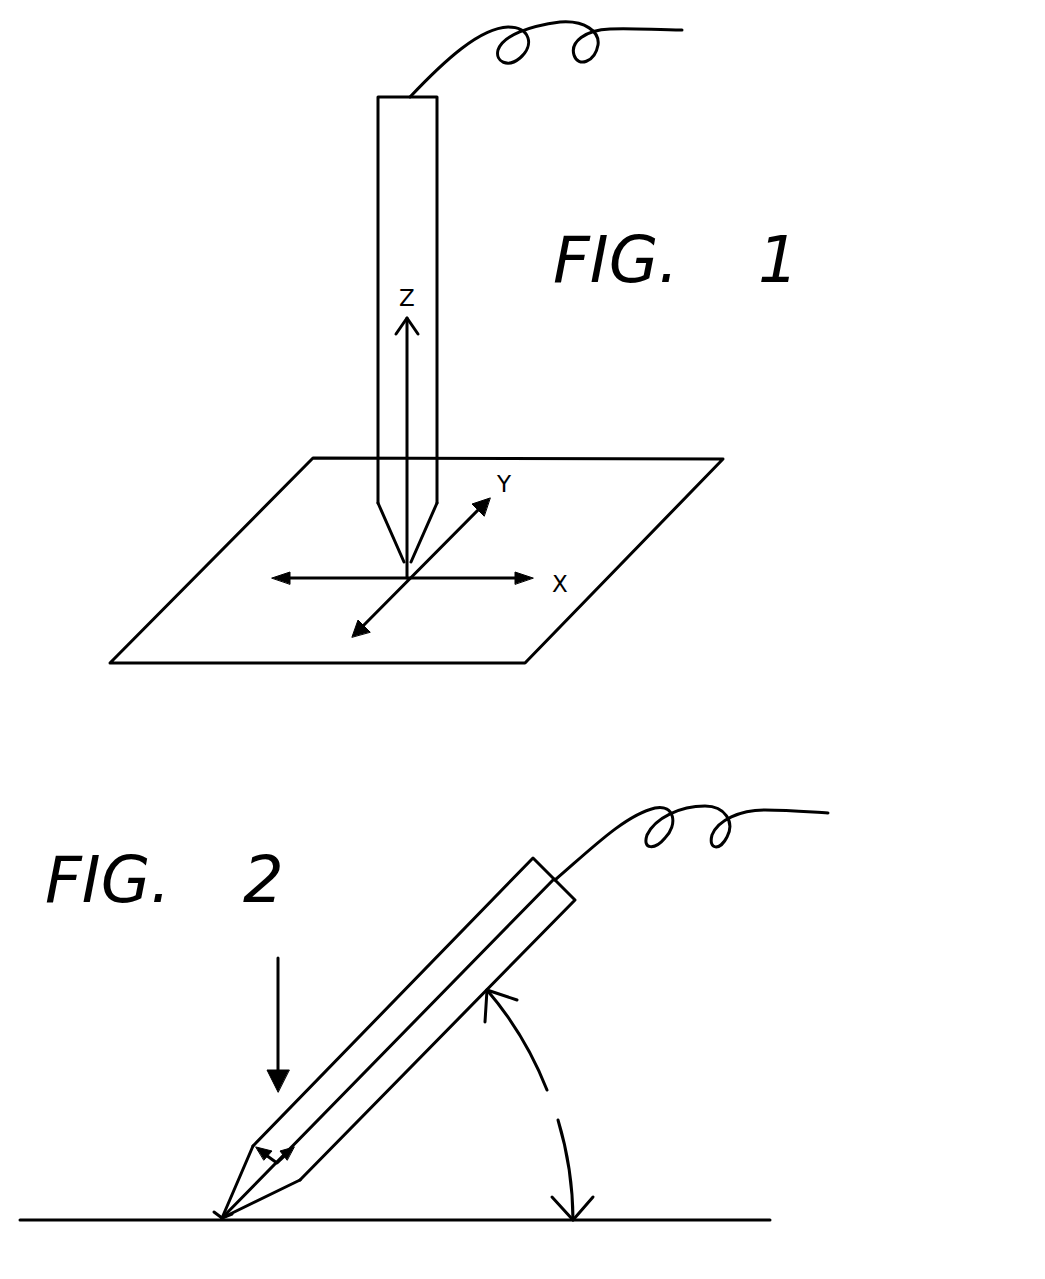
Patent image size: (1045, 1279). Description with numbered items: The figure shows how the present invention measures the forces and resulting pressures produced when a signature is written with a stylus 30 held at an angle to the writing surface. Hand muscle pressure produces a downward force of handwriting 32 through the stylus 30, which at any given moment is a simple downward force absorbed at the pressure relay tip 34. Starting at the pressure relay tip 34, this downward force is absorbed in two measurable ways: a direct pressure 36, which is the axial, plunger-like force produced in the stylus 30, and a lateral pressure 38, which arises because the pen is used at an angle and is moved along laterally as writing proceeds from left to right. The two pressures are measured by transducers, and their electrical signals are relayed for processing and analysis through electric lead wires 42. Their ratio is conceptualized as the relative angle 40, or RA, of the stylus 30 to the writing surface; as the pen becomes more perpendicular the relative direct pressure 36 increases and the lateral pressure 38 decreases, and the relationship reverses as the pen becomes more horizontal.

The stylus 30 is at (412, 986).
The downward force of handwriting 32 is at (285, 983).
The pressure relay tip 34 is at (221, 1216).
The direct pressure 36 is at (302, 1180).
The lateral pressure 38 is at (262, 1155).
The relative angle 40 is at (573, 1102).
The electric lead wires 42 is at (650, 802).